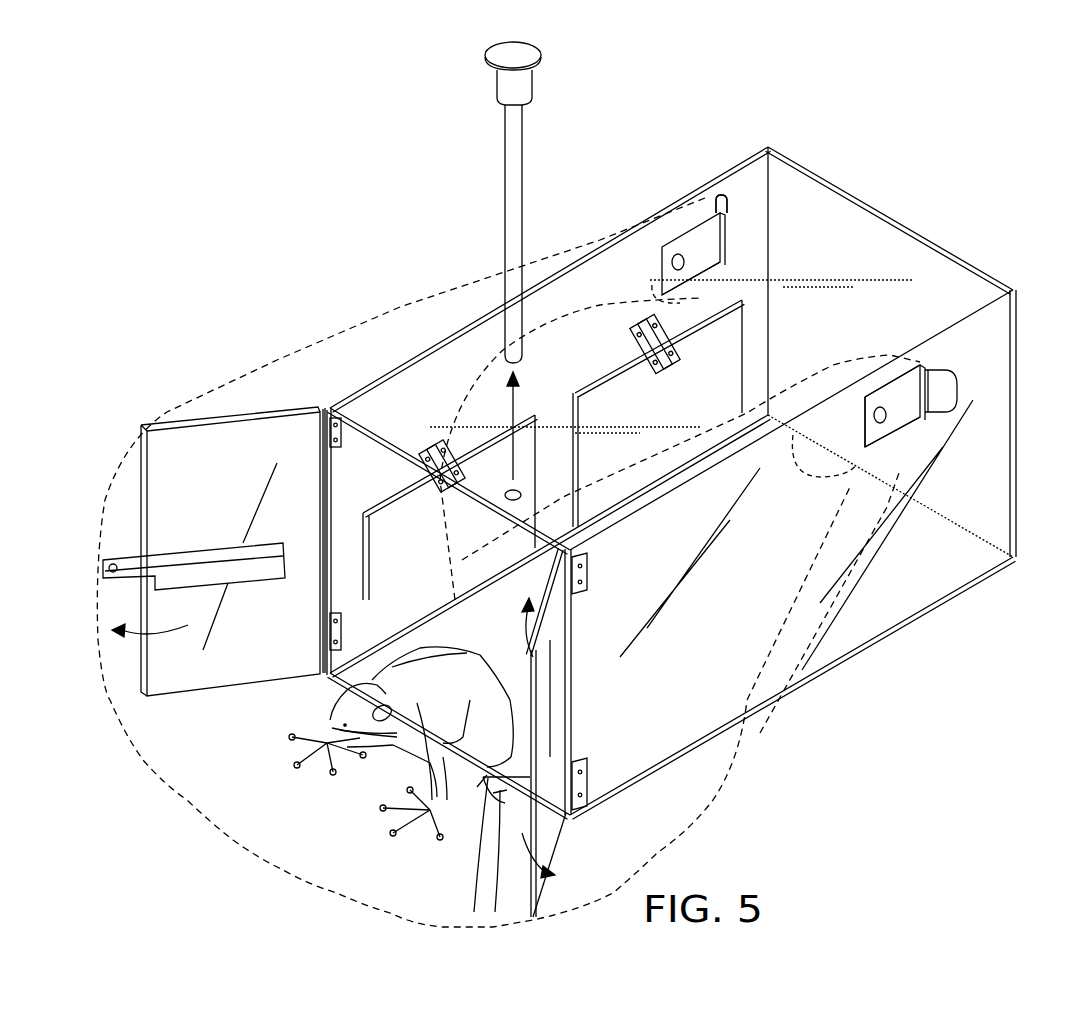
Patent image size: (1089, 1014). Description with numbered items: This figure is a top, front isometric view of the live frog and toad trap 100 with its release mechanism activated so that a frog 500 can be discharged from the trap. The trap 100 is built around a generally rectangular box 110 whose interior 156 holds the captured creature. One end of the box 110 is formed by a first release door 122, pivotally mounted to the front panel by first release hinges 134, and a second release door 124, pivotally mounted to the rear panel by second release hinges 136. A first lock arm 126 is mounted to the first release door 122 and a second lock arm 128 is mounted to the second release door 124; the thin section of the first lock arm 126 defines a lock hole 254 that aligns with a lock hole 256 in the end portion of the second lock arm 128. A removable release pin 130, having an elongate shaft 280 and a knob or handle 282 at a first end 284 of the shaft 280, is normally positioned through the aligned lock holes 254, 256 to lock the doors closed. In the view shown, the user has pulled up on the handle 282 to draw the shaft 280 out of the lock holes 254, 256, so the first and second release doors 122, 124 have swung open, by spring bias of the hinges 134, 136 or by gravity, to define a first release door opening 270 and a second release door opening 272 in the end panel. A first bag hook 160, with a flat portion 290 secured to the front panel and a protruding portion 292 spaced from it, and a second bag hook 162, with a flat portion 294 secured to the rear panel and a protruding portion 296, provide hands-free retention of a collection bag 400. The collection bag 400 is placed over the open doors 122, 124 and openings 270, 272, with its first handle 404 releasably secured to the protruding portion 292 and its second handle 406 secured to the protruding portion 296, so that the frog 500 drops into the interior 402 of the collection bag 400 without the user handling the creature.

The live frog and toad trap 100 is at (312, 262).
The box 110 is at (905, 225).
The first release door 122 is at (205, 420).
The second release door 124 is at (550, 833).
The first lock arm 126 is at (175, 560).
The second lock arm 128 is at (528, 835).
The release pin 130 is at (473, 137).
The first release hinges 134 is at (345, 428).
The second release hinges 136 is at (588, 576).
The interior 156 is at (522, 586).
The first bag hook 160 is at (690, 215).
The second bag hook 162 is at (888, 440).
The lock hole 254 is at (110, 563).
The lock hole 256 is at (480, 792).
The first release door opening 270 is at (355, 472).
The second release door opening 272 is at (538, 652).
The elongate shaft 280 is at (525, 136).
The handle 282 is at (522, 48).
The first end 284 is at (530, 366).
The flat portion 290 is at (670, 243).
The protruding portion 292 is at (742, 200).
The flat portion 294 is at (900, 365).
The protruding portion 296 is at (958, 392).
The collection bag 400 is at (228, 846).
The interior 402 is at (564, 537).
The first handle 404 is at (722, 268).
The second handle 406 is at (950, 440).
The frog 500 is at (388, 762).